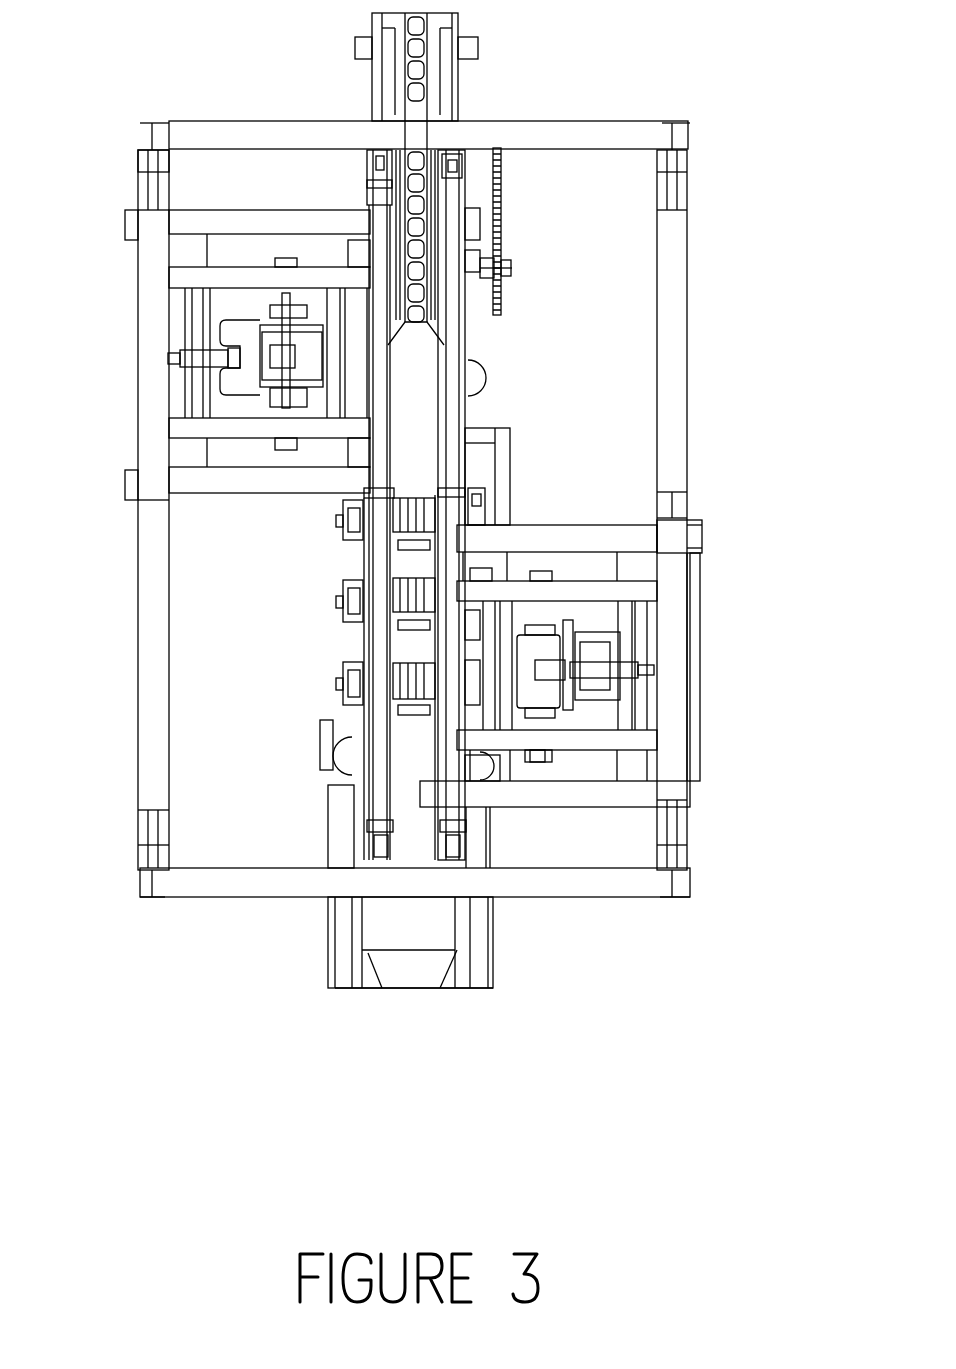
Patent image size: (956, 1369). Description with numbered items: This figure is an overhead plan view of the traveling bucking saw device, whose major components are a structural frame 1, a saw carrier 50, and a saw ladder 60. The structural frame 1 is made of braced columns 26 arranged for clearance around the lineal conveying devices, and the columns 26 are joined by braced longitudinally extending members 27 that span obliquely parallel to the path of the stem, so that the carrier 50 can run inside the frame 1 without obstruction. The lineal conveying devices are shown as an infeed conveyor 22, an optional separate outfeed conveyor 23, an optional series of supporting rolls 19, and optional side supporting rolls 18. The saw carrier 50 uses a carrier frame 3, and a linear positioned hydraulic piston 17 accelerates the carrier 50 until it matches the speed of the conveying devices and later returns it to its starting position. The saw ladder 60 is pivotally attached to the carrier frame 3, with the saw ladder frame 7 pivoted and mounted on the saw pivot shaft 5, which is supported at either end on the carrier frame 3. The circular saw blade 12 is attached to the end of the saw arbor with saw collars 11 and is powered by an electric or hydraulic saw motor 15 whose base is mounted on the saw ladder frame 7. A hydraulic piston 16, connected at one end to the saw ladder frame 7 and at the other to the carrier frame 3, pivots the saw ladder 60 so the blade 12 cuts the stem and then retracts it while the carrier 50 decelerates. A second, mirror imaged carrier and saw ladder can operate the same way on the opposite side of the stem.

The structural frame 1 is at (568, 119).
The carrier frame 3 is at (692, 532).
The saw pivot shaft 5 is at (550, 755).
The saw ladder frame 7 is at (696, 715).
The saw collars 11 is at (699, 622).
The circular saw blade 12 is at (699, 584).
The saw motor 15 is at (700, 690).
The hydraulic piston 16 is at (640, 660).
The linear positioned hydraulic piston 17 is at (488, 497).
The side supporting rolls 18 is at (485, 375).
The supporting rolls 19 is at (338, 685).
The infeed conveyor 22 is at (462, 90).
The outfeed conveyor 23 is at (330, 932).
The braced columns 26 is at (690, 113).
The braced longitudinally extending members 27 is at (690, 232).
The saw carrier 50 is at (272, 218).
The saw ladder 60 is at (210, 332).